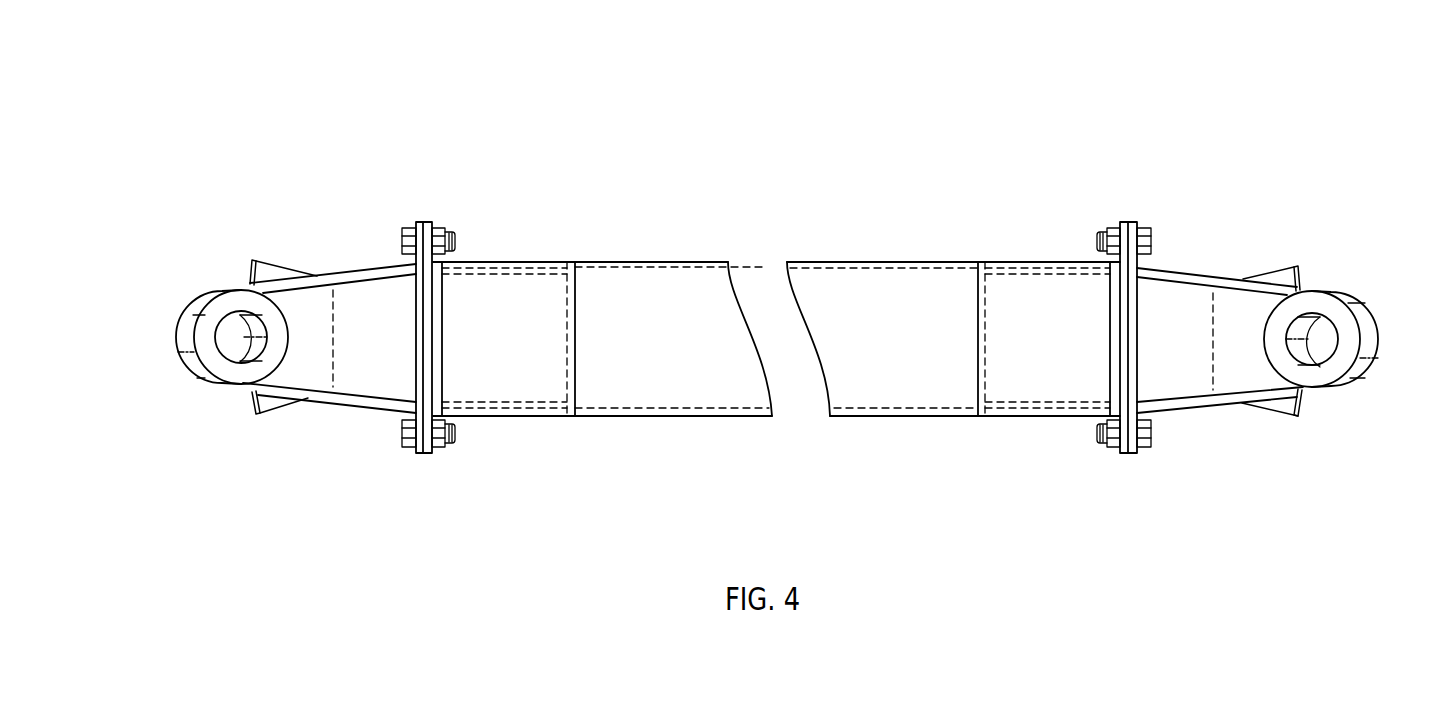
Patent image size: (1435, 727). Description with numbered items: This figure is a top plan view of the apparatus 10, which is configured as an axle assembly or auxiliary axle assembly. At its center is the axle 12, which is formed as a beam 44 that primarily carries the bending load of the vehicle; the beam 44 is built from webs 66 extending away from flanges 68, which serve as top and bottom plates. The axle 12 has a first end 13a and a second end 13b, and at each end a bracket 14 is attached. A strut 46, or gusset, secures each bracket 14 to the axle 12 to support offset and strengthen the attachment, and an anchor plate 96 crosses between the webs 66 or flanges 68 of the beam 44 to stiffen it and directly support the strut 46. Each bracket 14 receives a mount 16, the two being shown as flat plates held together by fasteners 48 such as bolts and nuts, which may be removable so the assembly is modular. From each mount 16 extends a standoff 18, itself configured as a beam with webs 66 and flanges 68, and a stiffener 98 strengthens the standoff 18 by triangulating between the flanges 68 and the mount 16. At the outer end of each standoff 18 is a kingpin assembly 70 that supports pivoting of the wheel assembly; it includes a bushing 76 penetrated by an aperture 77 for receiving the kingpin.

The apparatus 10 is at (963, 118).
The axle 12 is at (693, 252).
The first end 13a is at (513, 252).
The second end 13b is at (1053, 256).
The bracket 14 is at (428, 222).
The mount 16 is at (420, 287).
The standoff 18 is at (320, 404).
The beam 44 is at (667, 353).
The strut 46 is at (513, 353).
The fasteners 48 is at (440, 228).
The web 66 is at (373, 273).
The flange 68 is at (288, 295).
The kingpin assembly 70 is at (198, 386).
The bushing 76 is at (223, 305).
The aperture 77 is at (237, 339).
The anchor plate 96 is at (575, 311).
The stiffener 98 is at (329, 331).